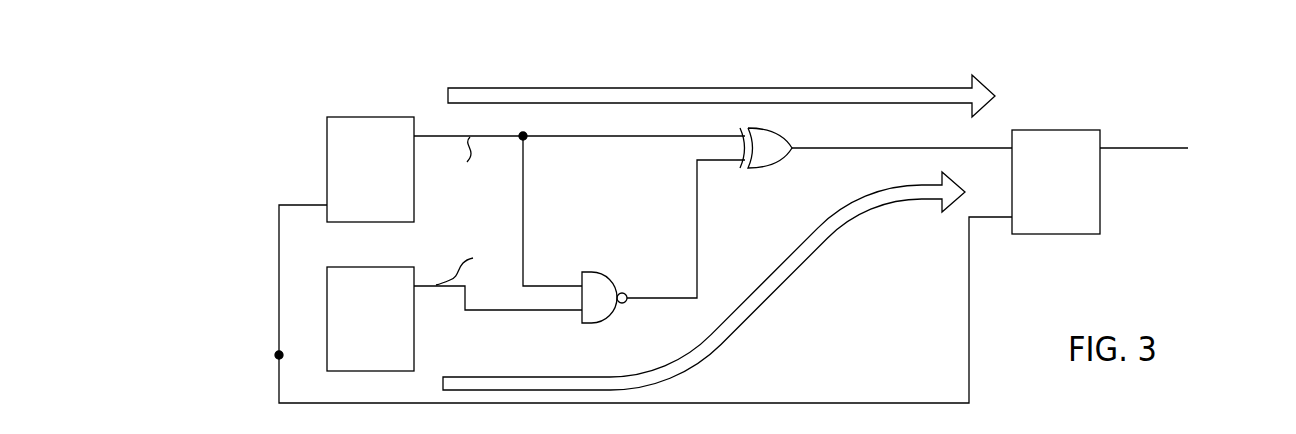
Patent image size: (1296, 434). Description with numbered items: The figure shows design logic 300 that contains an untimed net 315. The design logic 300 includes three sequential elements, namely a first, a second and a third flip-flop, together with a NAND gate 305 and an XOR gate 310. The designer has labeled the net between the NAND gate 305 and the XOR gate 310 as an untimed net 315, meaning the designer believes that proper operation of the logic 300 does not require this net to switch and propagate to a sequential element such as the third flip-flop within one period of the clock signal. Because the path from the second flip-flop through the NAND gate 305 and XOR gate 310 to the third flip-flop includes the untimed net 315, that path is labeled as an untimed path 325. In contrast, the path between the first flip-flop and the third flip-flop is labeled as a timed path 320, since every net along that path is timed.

The design logic 300 is at (776, 231).
The NAND gate 305 is at (597, 324).
The XOR gate 310 is at (766, 169).
The untimed net 315 is at (697, 212).
The timed path 320 is at (448, 96).
The untimed path 325 is at (748, 328).